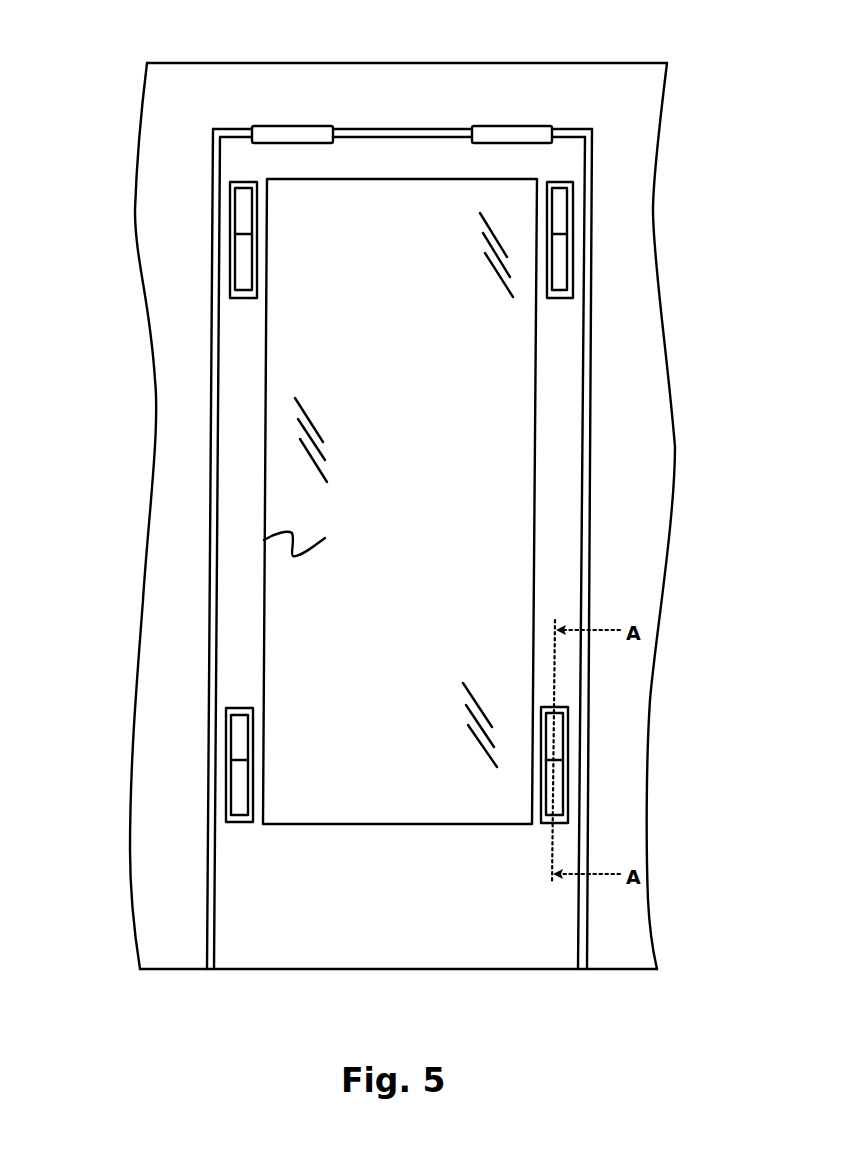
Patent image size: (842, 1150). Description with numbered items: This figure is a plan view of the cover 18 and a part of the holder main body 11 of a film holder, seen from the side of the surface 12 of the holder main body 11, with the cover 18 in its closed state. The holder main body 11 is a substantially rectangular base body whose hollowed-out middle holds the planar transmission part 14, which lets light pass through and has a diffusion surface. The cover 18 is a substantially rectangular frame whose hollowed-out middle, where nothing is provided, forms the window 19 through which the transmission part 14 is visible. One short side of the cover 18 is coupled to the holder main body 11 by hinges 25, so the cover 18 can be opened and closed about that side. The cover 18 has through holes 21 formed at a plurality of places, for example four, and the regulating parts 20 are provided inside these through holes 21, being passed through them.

The holder main body 11 is at (675, 447).
The surface 12 is at (157, 330).
The transmission part 14 is at (500, 547).
The cover 18 is at (563, 372).
The window 19 is at (312, 534).
The regulating part 20 is at (242, 268).
The through hole 21 is at (249, 182).
The hinge 25 is at (292, 128).